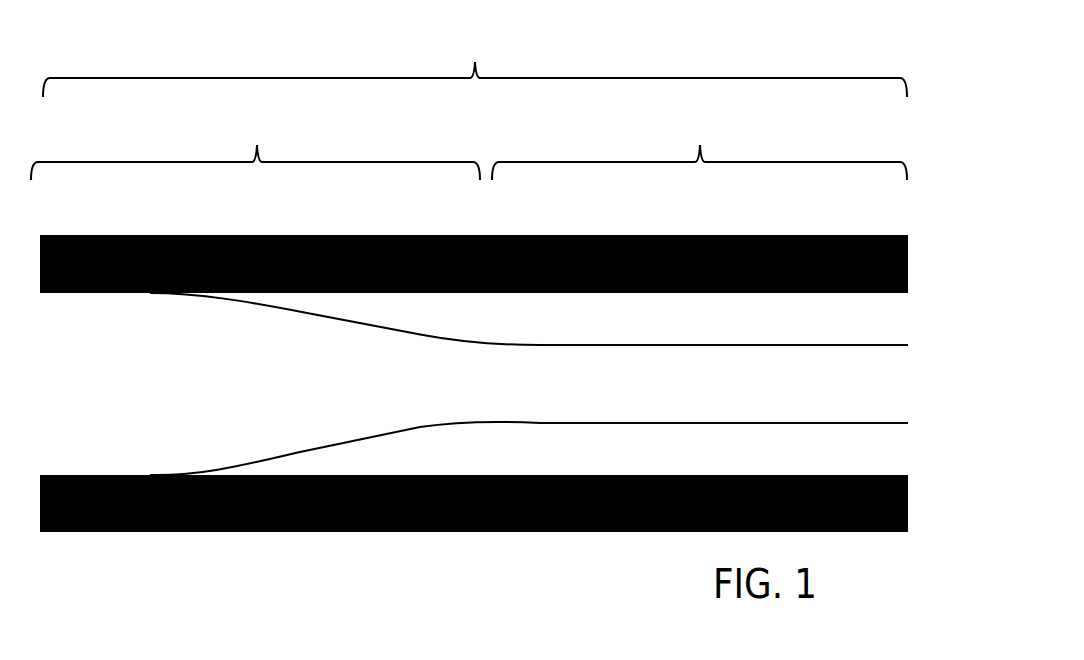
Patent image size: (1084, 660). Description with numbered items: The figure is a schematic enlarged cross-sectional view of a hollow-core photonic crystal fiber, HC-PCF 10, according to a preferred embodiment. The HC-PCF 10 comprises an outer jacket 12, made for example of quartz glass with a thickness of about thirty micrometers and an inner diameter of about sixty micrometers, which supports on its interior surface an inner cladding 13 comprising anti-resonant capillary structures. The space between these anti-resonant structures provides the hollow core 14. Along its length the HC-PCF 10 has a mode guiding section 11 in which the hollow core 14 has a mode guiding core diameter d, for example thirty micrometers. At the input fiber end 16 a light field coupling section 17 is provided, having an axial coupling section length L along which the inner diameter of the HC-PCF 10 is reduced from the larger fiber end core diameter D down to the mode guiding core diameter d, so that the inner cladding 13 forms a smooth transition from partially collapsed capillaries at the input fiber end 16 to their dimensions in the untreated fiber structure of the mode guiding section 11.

The HC-PCF 10 is at (487, 48).
The mode guiding section 11 is at (699, 146).
The outer jacket 12 is at (300, 230).
The inner cladding 13 is at (770, 437).
The hollow core 14 is at (847, 377).
The input fiber end 16 is at (107, 557).
The light field coupling section 17 is at (255, 146).